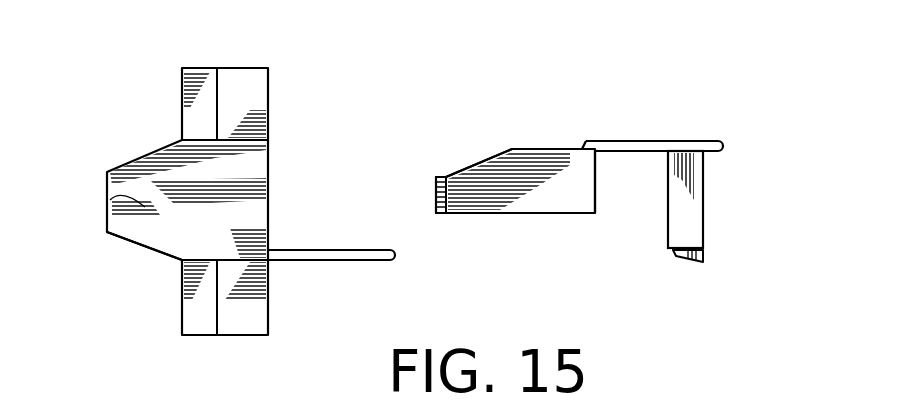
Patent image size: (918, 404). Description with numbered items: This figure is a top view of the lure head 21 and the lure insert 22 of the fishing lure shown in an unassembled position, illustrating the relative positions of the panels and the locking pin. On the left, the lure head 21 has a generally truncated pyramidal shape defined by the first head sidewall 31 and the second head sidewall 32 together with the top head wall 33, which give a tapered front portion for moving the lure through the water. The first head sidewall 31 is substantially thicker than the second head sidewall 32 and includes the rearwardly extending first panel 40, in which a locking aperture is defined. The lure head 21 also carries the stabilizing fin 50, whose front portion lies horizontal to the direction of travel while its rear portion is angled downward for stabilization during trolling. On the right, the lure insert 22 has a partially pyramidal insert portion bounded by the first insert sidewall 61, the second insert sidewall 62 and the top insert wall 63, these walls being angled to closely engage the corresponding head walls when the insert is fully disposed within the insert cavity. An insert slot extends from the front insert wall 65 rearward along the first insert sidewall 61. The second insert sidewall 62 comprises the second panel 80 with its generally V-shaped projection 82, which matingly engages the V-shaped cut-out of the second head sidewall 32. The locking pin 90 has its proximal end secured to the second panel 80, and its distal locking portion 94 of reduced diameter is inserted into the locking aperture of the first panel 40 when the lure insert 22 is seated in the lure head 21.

The lure head 21 is at (315, 118).
The lure insert 22 is at (656, 90).
The first head sidewall 31 is at (155, 247).
The second head sidewall 32 is at (152, 150).
The top head wall 33 is at (110, 200).
The first panel 40 is at (332, 260).
The stabilizing fin 50 is at (200, 313).
The first insert sidewall 61 is at (515, 218).
The second insert sidewall 62 is at (480, 164).
The top insert wall 63 is at (597, 180).
The front insert wall 65 is at (435, 203).
The second panel 80 is at (700, 141).
The V-shaped projection 82 is at (585, 148).
The locking pin 90 is at (700, 197).
The locking portion 94 is at (698, 262).